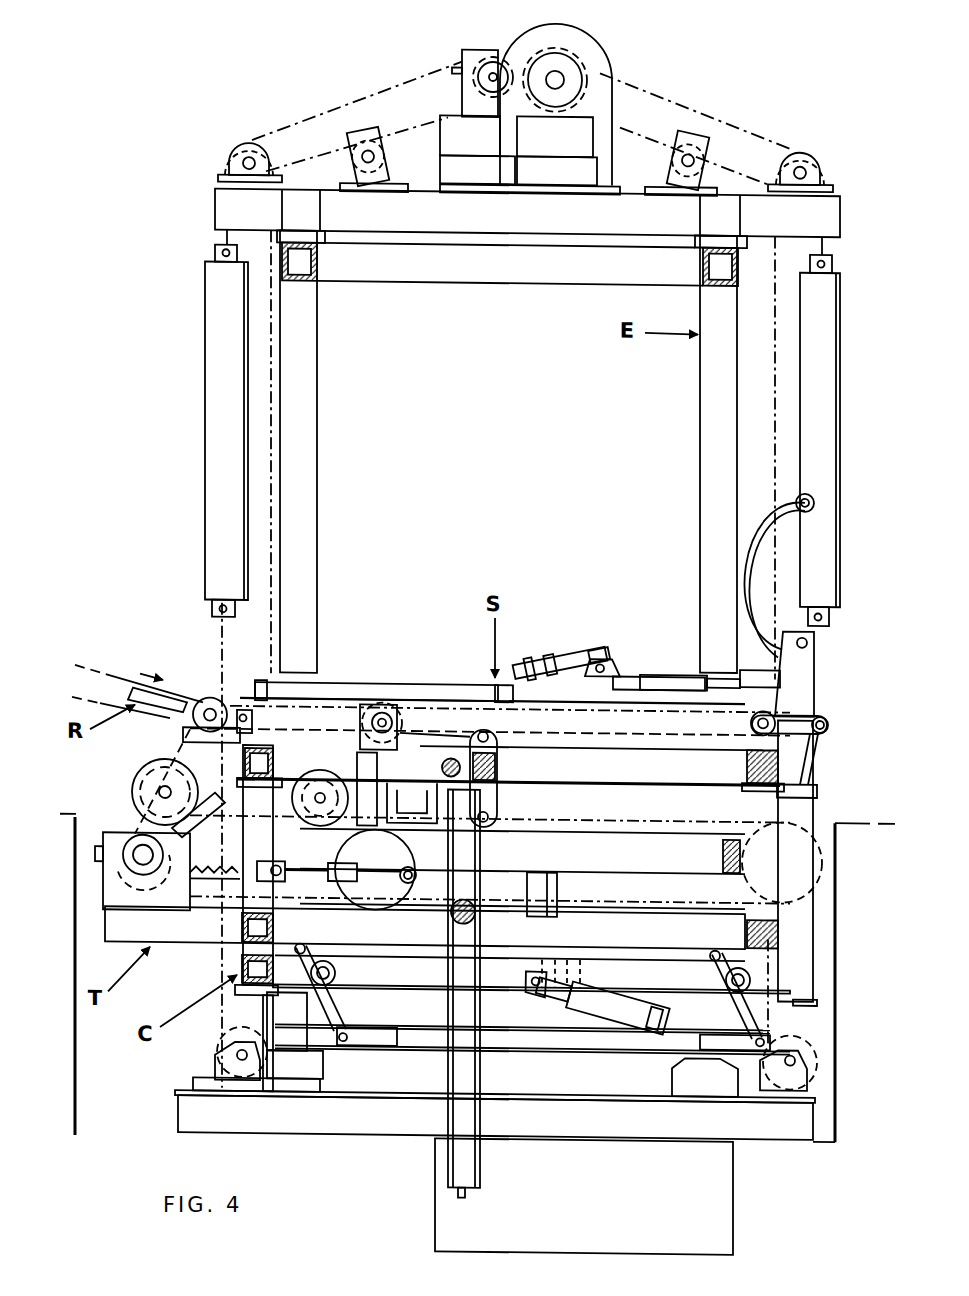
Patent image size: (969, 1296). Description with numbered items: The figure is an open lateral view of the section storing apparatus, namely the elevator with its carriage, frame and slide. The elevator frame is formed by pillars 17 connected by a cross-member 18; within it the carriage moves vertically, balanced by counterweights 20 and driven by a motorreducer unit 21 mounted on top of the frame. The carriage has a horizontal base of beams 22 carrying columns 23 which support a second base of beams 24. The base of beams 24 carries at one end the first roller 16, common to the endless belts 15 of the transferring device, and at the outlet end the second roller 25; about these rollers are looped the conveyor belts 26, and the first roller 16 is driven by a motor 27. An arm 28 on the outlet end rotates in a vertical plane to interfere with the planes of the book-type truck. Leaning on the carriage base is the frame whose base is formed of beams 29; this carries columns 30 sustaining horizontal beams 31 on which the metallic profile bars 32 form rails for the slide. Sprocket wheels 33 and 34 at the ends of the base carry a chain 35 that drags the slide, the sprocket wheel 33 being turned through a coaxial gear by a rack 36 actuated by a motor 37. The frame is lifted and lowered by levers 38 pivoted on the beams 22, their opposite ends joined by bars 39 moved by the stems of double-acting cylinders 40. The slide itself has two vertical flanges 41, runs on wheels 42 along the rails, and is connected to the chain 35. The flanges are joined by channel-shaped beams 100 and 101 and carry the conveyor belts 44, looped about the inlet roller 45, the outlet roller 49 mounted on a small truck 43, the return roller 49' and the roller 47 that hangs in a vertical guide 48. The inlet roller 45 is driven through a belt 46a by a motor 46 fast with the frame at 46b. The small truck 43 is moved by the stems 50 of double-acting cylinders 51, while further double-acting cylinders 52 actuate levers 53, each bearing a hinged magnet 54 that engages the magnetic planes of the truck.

The endless belts 15 is at (115, 667).
The first roller 16 is at (213, 698).
The pillars 17 is at (305, 413).
The cross-member 18 is at (470, 264).
The counterweights 20 is at (210, 336).
The motorreducer unit 21 is at (590, 48).
The beams 22 is at (525, 975).
The columns 23 is at (246, 842).
The beams 24 is at (635, 766).
The second roller 25 is at (748, 718).
The belts 26 is at (318, 712).
The motor 27 is at (148, 768).
The arm 28 is at (785, 515).
The beams 29 is at (208, 925).
The columns 30 is at (315, 903).
The horizontal beams 31 is at (568, 897).
The metallic profile bars 32 is at (580, 820).
The sprocket wheel 33 is at (130, 825).
The sprocket wheel 34 is at (825, 850).
The chain 35 is at (745, 815).
The rack 36 is at (212, 862).
The motor 37 is at (368, 905).
The levers 38 is at (343, 1012).
The bars 39 is at (405, 1045).
The double-acting cylinders 40 is at (615, 1008).
The flanges 41 is at (425, 714).
The wheels 42 is at (492, 822).
The small truck 43 is at (795, 700).
The conveyor belts 44 is at (500, 722).
The inlet roller 45 is at (442, 762).
The motor 46 is at (328, 785).
The belt 46a is at (360, 728).
The frame fastening point 46b is at (345, 768).
The roller 47 is at (450, 916).
The vertical guide 48 is at (465, 1150).
The outlet roller 49 is at (822, 748).
The return roller 49' is at (435, 724).
The stem 50 is at (660, 682).
The double-acting cylinders 51 is at (345, 684).
The double-acting cylinders 52 is at (535, 652).
The lever 53 is at (685, 667).
The magnet 54 is at (790, 665).
The channeled shaped beam 100 is at (403, 786).
The channeled shaped beam 101 is at (497, 770).